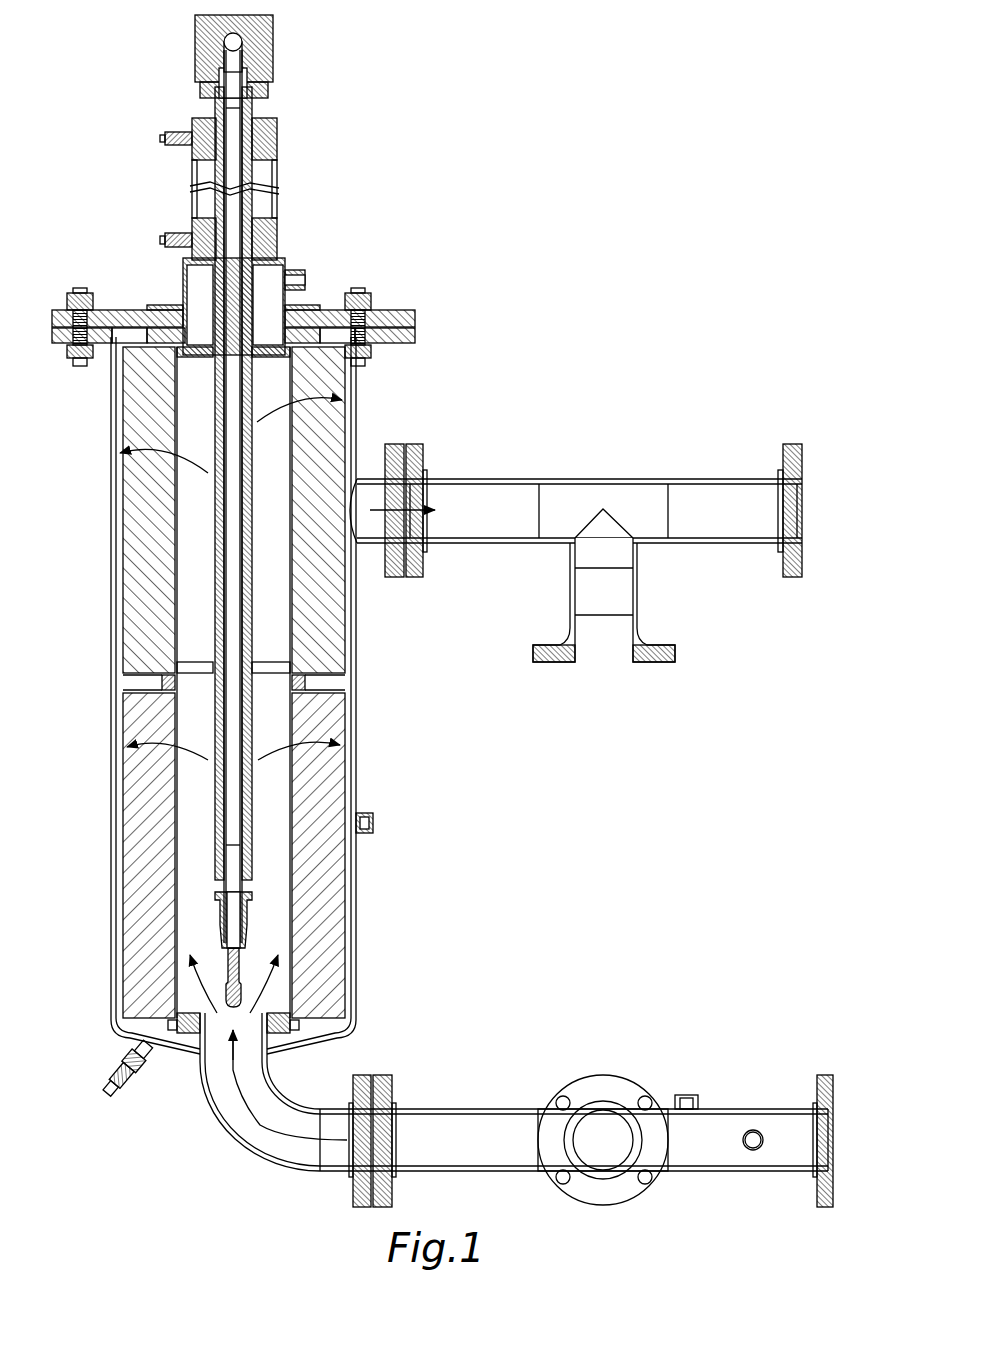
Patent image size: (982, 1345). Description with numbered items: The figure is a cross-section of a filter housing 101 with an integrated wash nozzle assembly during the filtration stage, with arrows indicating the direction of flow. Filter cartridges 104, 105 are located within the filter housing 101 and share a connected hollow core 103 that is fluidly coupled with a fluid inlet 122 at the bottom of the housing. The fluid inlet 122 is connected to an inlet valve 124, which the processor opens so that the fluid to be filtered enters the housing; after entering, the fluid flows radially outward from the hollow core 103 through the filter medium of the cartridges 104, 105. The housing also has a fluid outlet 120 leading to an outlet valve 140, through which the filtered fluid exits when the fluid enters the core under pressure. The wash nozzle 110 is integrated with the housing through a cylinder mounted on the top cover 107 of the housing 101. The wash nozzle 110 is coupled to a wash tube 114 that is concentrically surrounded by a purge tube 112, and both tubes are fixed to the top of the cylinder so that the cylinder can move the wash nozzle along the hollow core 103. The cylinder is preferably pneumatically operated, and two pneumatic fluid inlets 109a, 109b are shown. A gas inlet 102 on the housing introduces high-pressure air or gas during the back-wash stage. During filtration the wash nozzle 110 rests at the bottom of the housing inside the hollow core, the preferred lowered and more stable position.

The filter housing 101 is at (357, 757).
The gas inlet 102 is at (373, 823).
The hollow core 103 is at (283, 617).
The filter cartridge 104 is at (138, 623).
The filter cartridge 105 is at (333, 930).
The top cover 107 is at (412, 317).
The pneumatic fluid inlet 109a is at (177, 133).
The pneumatic fluid inlet 109b is at (177, 232).
The wash nozzle 110 is at (215, 918).
The purge tube 112 is at (213, 840).
The wash tube 114 is at (210, 780).
The fluid outlet 120 is at (482, 502).
The fluid inlet 122 is at (242, 1042).
The inlet valve 124 is at (602, 1078).
The outlet valve 140 is at (603, 652).